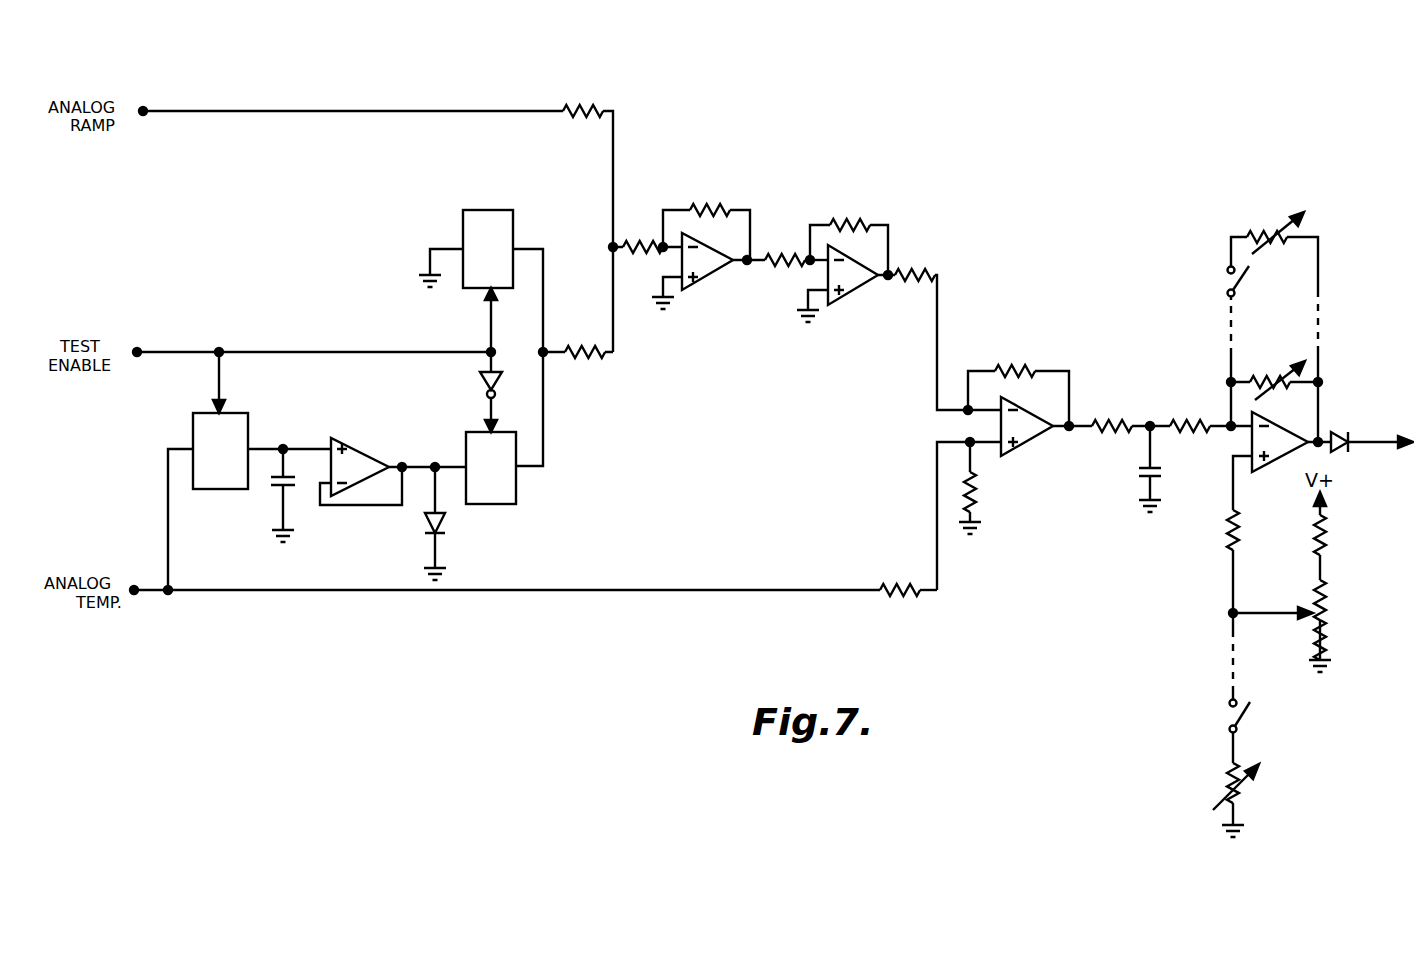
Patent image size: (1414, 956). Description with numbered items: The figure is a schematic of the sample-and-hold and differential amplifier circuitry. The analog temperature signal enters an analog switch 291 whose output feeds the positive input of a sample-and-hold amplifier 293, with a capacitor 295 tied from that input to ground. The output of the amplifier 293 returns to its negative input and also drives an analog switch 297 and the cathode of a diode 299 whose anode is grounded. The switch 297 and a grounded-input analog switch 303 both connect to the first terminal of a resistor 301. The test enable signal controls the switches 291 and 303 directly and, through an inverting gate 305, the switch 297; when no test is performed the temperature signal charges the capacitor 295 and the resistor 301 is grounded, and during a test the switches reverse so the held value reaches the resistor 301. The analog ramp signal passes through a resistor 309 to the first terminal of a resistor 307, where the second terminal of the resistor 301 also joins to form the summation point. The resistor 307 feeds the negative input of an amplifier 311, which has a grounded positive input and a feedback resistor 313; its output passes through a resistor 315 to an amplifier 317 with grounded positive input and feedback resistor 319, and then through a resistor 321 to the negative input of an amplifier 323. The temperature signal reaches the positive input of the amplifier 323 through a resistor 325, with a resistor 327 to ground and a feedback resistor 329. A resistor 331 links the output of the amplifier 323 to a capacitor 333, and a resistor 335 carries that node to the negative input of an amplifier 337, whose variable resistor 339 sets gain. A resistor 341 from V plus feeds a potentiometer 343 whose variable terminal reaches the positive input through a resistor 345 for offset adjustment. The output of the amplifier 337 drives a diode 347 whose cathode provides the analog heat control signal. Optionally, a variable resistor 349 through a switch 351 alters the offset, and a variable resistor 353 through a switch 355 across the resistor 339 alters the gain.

The analog switch 291 is at (250, 420).
The sample-and-hold amplifier 293 is at (358, 440).
The capacitor 295 is at (275, 492).
The analog switch 297 is at (517, 494).
The diode 299 is at (446, 530).
The resistor 301 is at (585, 360).
The analog switch 303 is at (514, 214).
The inverting gate 305 is at (485, 376).
The resistor 307 is at (635, 240).
The resistor 309 is at (588, 102).
The amplifier 311 is at (693, 285).
The resistor 313 is at (712, 207).
The resistor 315 is at (778, 268).
The amplifier 317 is at (840, 300).
The resistor 319 is at (852, 222).
The resistor 321 is at (928, 268).
The amplifier 323 is at (1022, 445).
The resistor 325 is at (890, 595).
The resistor 327 is at (975, 505).
The resistor 329 is at (1020, 370).
The resistor 331 is at (1100, 420).
The capacitor 333 is at (1142, 480).
The resistor 335 is at (1183, 420).
The amplifier 337 is at (1270, 465).
The variable resistor 339 is at (1265, 375).
The resistor 341 is at (1326, 540).
The potentiometer 343 is at (1325, 620).
The resistor 345 is at (1228, 530).
The diode 347 is at (1338, 430).
The variable resistor 349 is at (1252, 789).
The switch 351 is at (1247, 718).
The variable resistor 353 is at (1268, 232).
The switch 355 is at (1224, 275).